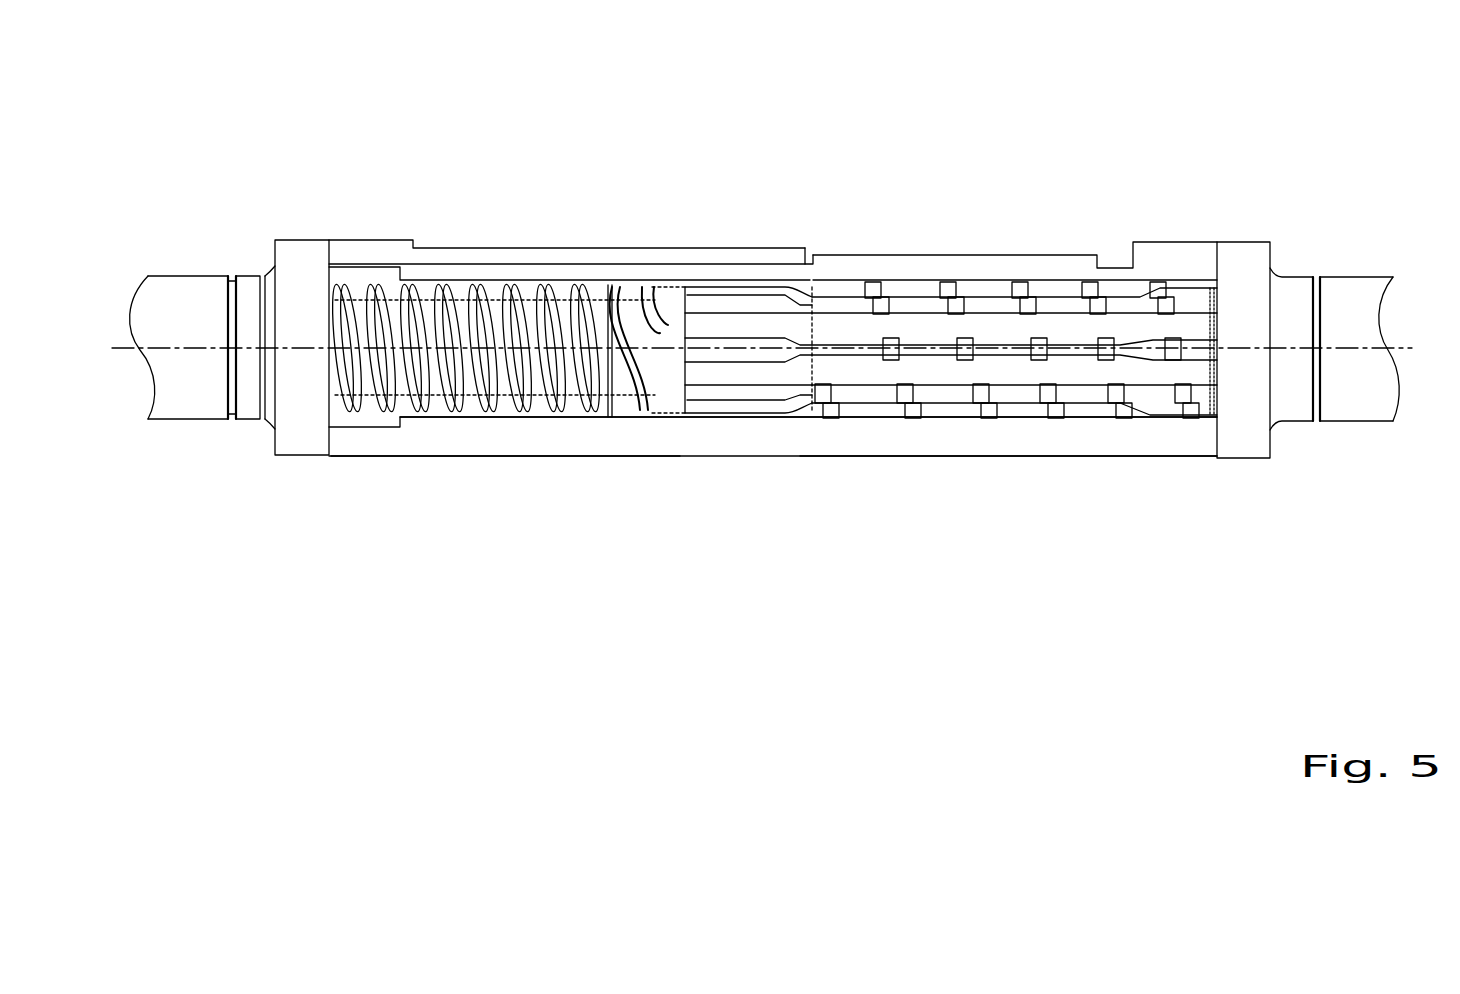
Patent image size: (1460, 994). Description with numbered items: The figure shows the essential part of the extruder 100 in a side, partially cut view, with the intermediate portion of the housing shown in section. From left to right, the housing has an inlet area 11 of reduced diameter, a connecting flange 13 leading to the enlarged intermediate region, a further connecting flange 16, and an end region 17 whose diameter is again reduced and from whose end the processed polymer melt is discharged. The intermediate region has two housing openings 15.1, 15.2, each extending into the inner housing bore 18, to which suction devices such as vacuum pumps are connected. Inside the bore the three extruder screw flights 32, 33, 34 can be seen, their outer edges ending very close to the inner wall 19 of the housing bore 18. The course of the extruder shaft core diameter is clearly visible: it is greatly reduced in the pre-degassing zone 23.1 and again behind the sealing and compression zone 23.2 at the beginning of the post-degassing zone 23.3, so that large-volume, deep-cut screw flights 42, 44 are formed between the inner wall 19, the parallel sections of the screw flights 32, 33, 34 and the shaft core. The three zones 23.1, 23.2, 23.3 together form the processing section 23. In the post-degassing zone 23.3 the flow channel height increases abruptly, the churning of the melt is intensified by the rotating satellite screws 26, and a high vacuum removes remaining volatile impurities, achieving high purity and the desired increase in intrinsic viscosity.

The extruder 100 is at (170, 135).
The inlet area 11 is at (198, 310).
The connecting flange 13 is at (304, 268).
The screw flights 42 is at (473, 320).
The housing opening 15.1 is at (493, 270).
The extruder screw flight 32 is at (548, 277).
The extruder screw flight 33 is at (582, 290).
The extruder screw flight 34 is at (622, 297).
The inner housing bore 18 is at (807, 255).
The housing opening 15.2 is at (918, 272).
The screw flights 44 is at (1057, 320).
The further connecting flange 16 is at (1255, 262).
The end region 17 is at (1338, 297).
The inner wall 19 is at (610, 420).
The damping unit 23 is at (1198, 665).
The pre-degassing zone 23.1 is at (680, 500).
The sealing and compression zone 23.2 is at (800, 500).
The post-degassing zone 23.3 is at (1215, 500).
The satellite screws 26 is at (893, 458).